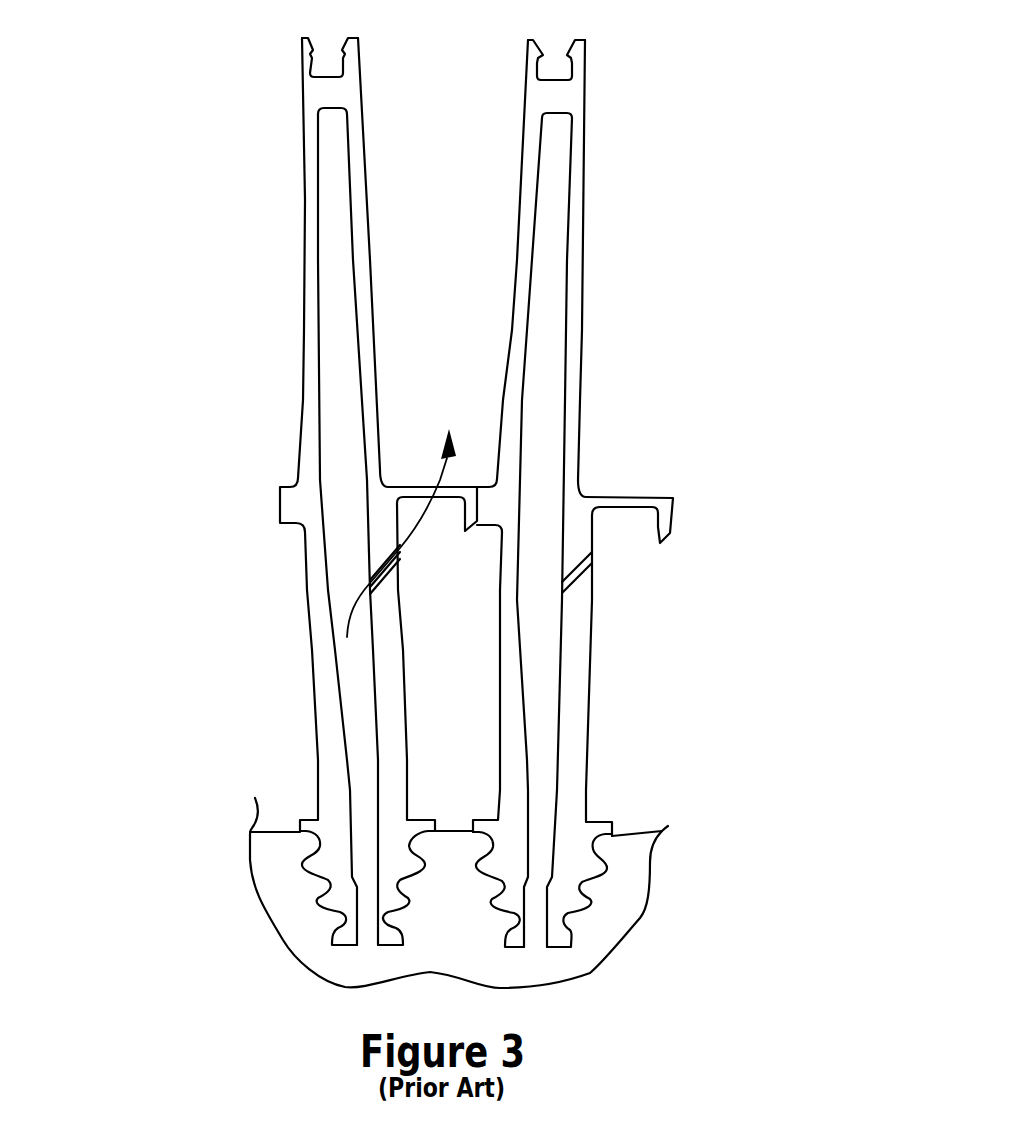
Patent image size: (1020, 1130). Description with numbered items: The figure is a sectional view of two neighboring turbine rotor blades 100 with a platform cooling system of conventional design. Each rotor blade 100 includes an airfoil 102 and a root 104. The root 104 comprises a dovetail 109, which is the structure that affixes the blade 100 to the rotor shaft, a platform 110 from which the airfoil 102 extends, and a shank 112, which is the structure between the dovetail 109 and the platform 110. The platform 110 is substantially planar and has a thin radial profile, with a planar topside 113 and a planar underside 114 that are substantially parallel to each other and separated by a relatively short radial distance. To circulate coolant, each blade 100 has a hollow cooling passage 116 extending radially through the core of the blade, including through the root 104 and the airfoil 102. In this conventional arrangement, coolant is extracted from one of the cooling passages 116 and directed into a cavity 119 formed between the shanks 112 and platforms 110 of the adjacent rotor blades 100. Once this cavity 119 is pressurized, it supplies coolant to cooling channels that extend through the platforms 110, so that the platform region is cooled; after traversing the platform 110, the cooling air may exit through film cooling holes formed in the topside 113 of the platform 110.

The turbine rotor blade 100 is at (456, 492).
The airfoil 102 is at (303, 318).
The root 104 is at (700, 746).
The dovetail 109 is at (577, 903).
The platform 110 is at (432, 488).
The shank 112 is at (255, 707).
The topside 113 is at (458, 487).
The underside 114 is at (443, 497).
The cooling passage 116 is at (338, 547).
The cavity 119 is at (472, 661).